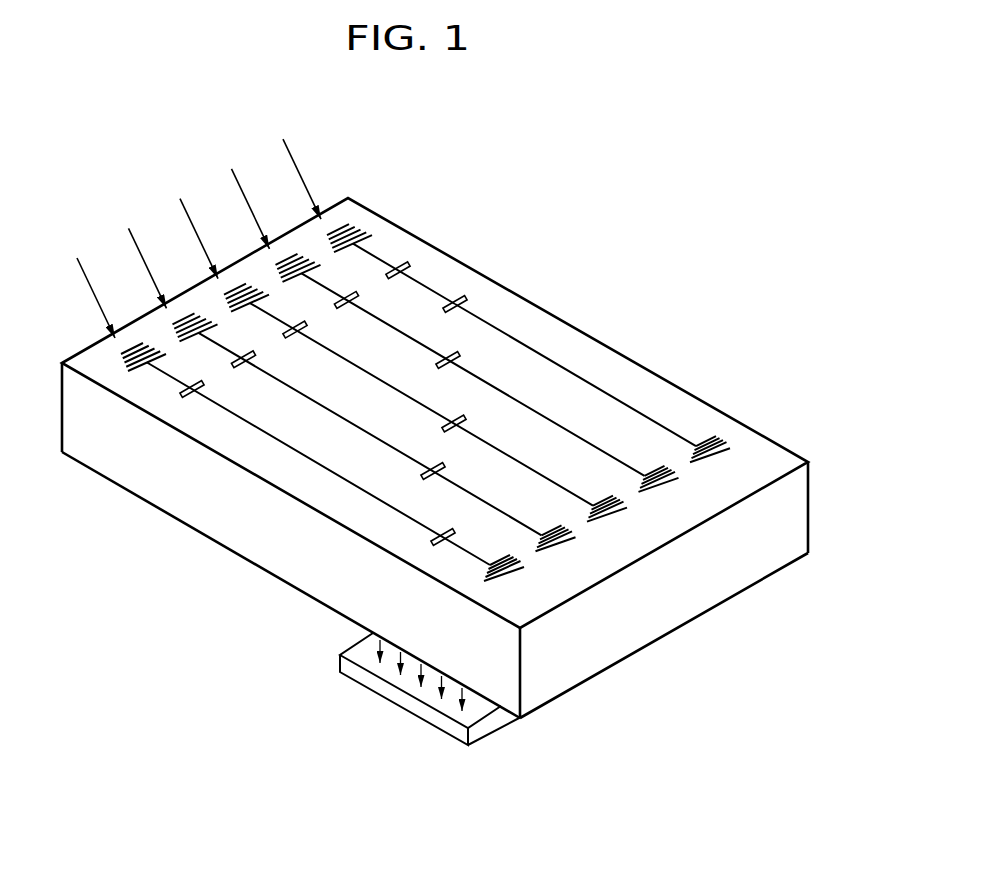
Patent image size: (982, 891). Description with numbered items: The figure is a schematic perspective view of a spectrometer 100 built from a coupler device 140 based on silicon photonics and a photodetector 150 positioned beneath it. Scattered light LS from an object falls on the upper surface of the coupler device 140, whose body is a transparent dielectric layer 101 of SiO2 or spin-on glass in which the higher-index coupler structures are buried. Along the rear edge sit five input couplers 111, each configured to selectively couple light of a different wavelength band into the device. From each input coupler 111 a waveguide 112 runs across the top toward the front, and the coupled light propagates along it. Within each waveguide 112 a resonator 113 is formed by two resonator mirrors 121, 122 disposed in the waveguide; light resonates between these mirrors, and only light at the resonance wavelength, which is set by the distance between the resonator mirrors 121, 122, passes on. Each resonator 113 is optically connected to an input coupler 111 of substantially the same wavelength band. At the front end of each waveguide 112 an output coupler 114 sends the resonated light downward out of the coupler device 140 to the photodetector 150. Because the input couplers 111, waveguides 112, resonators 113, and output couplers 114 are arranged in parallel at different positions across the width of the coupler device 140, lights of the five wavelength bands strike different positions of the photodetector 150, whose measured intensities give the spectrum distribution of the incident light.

The spectrometer 100 is at (705, 185).
The transparent dielectric layer 101 is at (180, 498).
The input coupler 111 is at (371, 221).
The waveguide 112 is at (566, 367).
The resonator 113 is at (438, 290).
The output coupler 114 is at (734, 433).
The resonator mirror 121 is at (407, 268).
The resonator mirror 122 is at (459, 304).
The coupler device 140 is at (228, 552).
The photodetector 150 is at (408, 700).